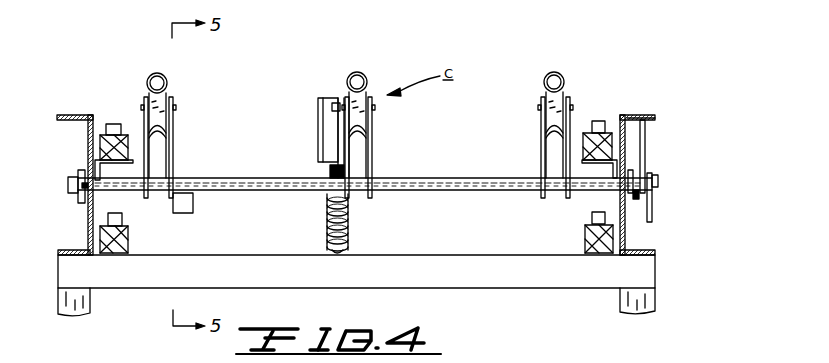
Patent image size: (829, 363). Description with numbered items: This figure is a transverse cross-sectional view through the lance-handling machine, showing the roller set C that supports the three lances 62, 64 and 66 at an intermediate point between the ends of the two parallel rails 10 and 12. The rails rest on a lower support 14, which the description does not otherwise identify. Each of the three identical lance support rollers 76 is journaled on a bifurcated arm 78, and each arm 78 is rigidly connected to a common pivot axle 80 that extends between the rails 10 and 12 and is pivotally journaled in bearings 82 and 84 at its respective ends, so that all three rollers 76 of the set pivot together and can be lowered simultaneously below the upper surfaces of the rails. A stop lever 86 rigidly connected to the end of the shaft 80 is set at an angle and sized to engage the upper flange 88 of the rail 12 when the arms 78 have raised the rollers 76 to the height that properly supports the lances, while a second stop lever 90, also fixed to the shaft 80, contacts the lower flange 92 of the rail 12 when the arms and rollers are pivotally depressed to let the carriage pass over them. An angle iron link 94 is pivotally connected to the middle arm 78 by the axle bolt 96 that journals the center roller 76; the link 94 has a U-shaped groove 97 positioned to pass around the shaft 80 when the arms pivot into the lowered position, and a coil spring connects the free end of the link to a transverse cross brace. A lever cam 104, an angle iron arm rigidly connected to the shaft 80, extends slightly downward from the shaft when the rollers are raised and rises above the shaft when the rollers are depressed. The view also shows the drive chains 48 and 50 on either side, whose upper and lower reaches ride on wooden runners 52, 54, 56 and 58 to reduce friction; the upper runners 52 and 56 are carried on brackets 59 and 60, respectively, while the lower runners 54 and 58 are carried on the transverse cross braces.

The rail 10 is at (74, 115).
The rail 12 is at (632, 115).
The base beam with legs 14 is at (90, 308).
The chain 48 is at (115, 124).
The chain 50 is at (600, 121).
The wooden runner 52 is at (100, 148).
The wooden runner 54 is at (130, 243).
The wooden runner 56 is at (612, 148).
The wooden runner 58 is at (585, 240).
The bracket 59 is at (130, 176).
The bracket 60 is at (593, 170).
The lance 62 is at (160, 72).
The lance 64 is at (356, 72).
The lance 66 is at (562, 58).
The lance support roller 76 is at (172, 96).
The bifurcated arm 78 is at (168, 152).
The pivot axle 80 is at (274, 166).
The bearing 82 is at (77, 198).
The bearing 84 is at (637, 196).
The stop lever 86 is at (646, 140).
The upper flange 88 is at (652, 118).
The second stop lever 90 is at (653, 220).
The lower flange 92 is at (650, 252).
The angle iron link 94 is at (327, 98).
The axle bolt 96 is at (330, 108).
The U-shaped groove 97 is at (330, 166).
The lever cam 104 is at (195, 205).